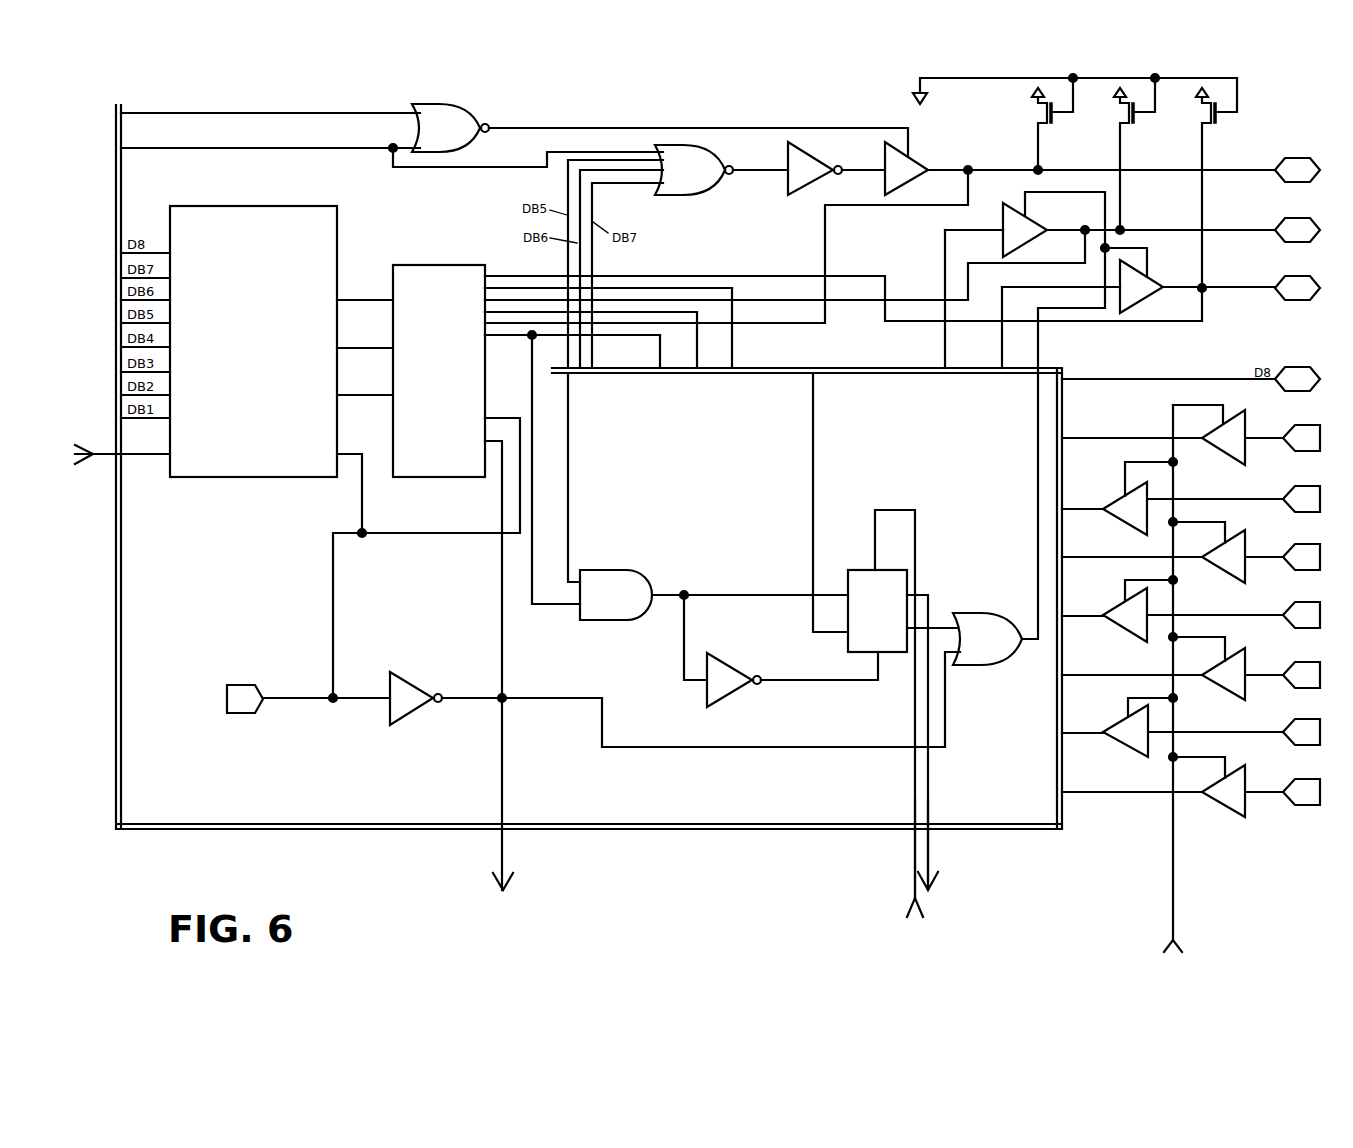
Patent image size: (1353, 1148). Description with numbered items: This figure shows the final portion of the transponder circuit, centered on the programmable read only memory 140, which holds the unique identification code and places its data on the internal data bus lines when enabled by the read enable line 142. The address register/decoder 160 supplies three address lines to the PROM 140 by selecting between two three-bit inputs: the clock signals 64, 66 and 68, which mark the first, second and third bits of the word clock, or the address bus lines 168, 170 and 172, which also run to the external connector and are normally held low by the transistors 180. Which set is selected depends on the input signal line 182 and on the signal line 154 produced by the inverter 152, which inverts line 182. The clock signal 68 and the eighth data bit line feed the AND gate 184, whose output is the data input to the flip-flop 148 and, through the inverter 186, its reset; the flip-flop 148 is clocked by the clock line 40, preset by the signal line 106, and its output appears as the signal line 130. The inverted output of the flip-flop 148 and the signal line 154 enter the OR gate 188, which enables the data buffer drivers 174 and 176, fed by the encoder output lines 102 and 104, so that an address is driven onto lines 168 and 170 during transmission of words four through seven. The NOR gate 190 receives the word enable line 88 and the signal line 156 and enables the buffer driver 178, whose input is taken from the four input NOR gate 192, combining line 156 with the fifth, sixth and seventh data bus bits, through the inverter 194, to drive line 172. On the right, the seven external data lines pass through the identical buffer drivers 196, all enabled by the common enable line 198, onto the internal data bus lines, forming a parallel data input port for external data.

The clock line 40 is at (820, 435).
The clock signal 64 is at (733, 360).
The clock signal 66 is at (700, 358).
The clock signal 68 is at (665, 360).
The word enable line 88 is at (215, 110).
The output line 102 is at (998, 357).
The output line 104 is at (942, 257).
The signal line 106 is at (905, 845).
The signal line 130 is at (937, 847).
The programmable read only memory 140 is at (281, 371).
The read enable line 142 is at (132, 458).
The flip-flop 148 is at (902, 713).
The inverter 152 is at (413, 677).
The signal line 154 is at (510, 770).
The signal line 156 is at (218, 152).
The address register/decoder 160 is at (765, 436).
The address bus line 168 is at (1232, 283).
The address bus line 170 is at (1227, 225).
The address bus line 172 is at (1227, 163).
The data buffer driver 174 is at (1153, 305).
The data buffer driver 176 is at (1038, 215).
The data buffer driver 178 is at (920, 153).
The transistors 180 is at (1060, 123).
The input signal line 182 is at (285, 693).
The AND gate 184 is at (714, 595).
The inverter 186 is at (743, 690).
The OR gate 188 is at (812, 680).
The NOR gate 190 is at (660, 130).
The four input NOR gate 192 is at (721, 170).
The inverter 194 is at (810, 147).
The buffer drivers 196 is at (1152, 490).
The enable line 198 is at (1178, 893).